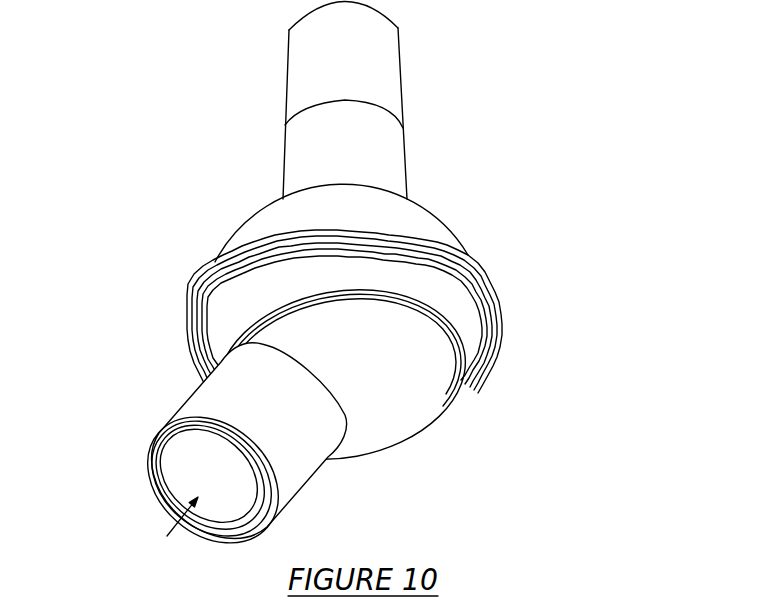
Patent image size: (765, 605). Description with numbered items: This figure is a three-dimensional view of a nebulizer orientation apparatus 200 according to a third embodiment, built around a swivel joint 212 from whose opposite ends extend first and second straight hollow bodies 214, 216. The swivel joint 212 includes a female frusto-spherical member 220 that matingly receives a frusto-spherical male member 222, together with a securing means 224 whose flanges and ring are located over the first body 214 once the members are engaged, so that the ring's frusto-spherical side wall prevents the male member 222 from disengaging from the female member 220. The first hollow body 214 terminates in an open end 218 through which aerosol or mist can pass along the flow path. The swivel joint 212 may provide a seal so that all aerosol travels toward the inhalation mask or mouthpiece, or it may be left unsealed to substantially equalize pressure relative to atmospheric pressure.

The hub assembly 200 is at (342, 284).
The swivel joint 212 is at (490, 397).
The first body 214 is at (289, 508).
The upper stem 216 is at (405, 82).
The port opening 218 is at (176, 416).
The female frusto-spherical member 220 is at (250, 218).
The frusto-spherical male member 222 is at (410, 447).
The securing means 224 is at (170, 305).